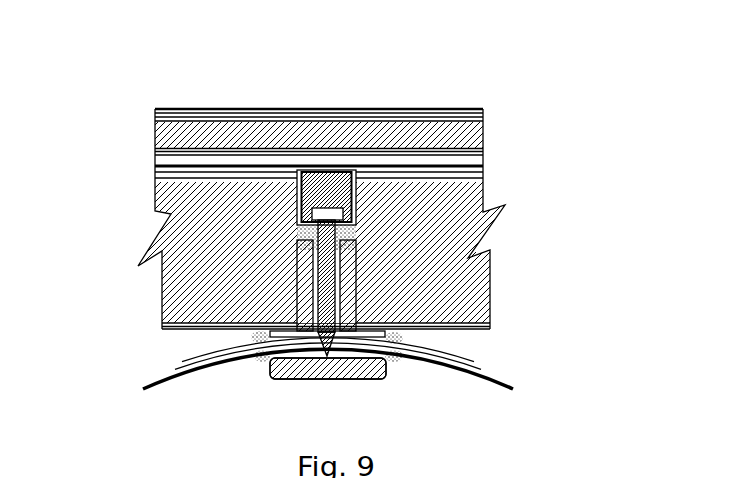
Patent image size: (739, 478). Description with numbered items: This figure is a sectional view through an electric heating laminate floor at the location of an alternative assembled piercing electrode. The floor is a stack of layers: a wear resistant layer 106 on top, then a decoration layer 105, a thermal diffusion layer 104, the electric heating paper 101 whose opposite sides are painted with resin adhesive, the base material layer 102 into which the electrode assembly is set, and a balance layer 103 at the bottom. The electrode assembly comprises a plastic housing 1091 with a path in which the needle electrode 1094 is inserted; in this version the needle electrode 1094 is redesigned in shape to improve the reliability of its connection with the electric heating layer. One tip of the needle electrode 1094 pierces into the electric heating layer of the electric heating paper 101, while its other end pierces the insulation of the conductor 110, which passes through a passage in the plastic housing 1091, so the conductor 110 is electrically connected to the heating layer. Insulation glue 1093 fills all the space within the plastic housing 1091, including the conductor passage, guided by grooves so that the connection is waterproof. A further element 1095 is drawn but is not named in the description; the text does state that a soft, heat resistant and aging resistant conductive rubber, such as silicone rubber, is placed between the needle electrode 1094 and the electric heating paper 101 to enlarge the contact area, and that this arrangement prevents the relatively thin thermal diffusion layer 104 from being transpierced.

The electric heating paper 101 is at (573, 197).
The base material layer 102 is at (573, 304).
The balance layer 103 is at (573, 353).
The thermal diffusion layer 104 is at (483, 135).
The decoration layer 105 is at (483, 108).
The wear resistant layer 106 is at (454, 108).
The conductor 110 is at (515, 388).
The plastic housing 1091 is at (297, 296).
The insulation glue 1093 is at (305, 170).
The needle electrode 1094 is at (357, 260).
The pin 1095 is at (343, 170).